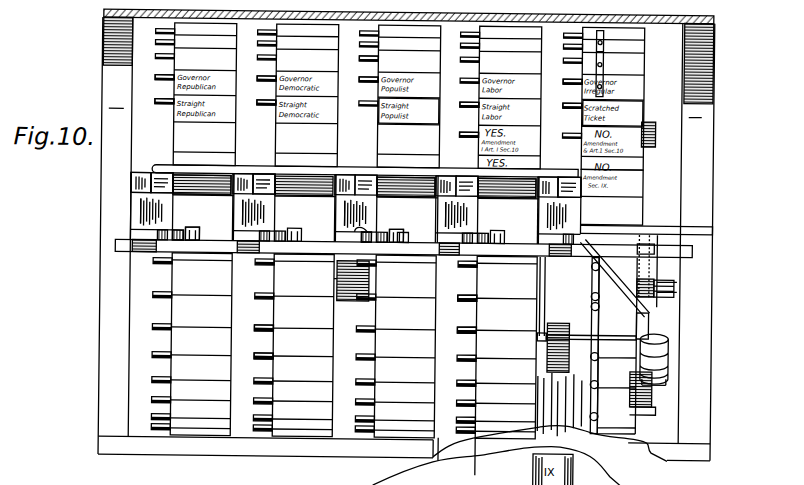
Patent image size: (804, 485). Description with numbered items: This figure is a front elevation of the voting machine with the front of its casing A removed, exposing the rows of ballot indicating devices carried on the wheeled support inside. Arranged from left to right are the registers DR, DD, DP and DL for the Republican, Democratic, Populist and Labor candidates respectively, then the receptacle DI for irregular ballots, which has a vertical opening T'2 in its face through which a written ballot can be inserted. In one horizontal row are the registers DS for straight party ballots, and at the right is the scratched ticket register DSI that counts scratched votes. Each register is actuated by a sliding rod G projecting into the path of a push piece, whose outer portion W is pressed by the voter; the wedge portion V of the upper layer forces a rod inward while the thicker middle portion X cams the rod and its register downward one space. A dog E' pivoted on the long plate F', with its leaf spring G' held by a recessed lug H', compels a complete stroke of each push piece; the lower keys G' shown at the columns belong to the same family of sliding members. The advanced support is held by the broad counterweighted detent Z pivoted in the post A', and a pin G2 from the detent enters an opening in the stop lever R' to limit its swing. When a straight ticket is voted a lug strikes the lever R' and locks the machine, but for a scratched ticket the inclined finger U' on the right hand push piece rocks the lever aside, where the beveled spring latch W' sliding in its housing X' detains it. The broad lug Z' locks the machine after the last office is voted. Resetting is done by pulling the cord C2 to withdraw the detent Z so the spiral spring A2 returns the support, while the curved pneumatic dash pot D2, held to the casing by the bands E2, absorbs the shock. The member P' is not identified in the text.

The register DR is at (175, 140).
The register DD is at (277, 145).
The register DP is at (379, 136).
The register DL is at (480, 92).
The receptacle for irregular ballots DI is at (640, 56).
The straight party ballot register DS is at (378, 97).
The scratched ticket register DSI is at (642, 102).
The vertical opening T'2 is at (611, 64).
The sliding rod G is at (361, 96).
The leaf spring G' is at (356, 284).
The projecting portion of push piece W is at (376, 180).
The wedge portion V is at (133, 181).
The middle portion of push piece X is at (325, 213).
The pusher bar P' is at (355, 175).
The recessed lug H' is at (295, 221).
The dog E' is at (180, 254).
The plate F' is at (423, 246).
The spiral spring A2 is at (340, 275).
The casing A is at (398, 237).
The spring latch W' is at (648, 252).
The housing X' is at (676, 257).
The stop lever R' is at (659, 281).
The finger U' is at (613, 346).
The cord or wire C2 is at (543, 300).
The detent Z is at (538, 348).
The pin G2 is at (596, 337).
The post A' is at (541, 405).
The pneumatic dash pot D2 is at (667, 333).
The bands E2 is at (672, 362).
The lug Z' is at (642, 403).